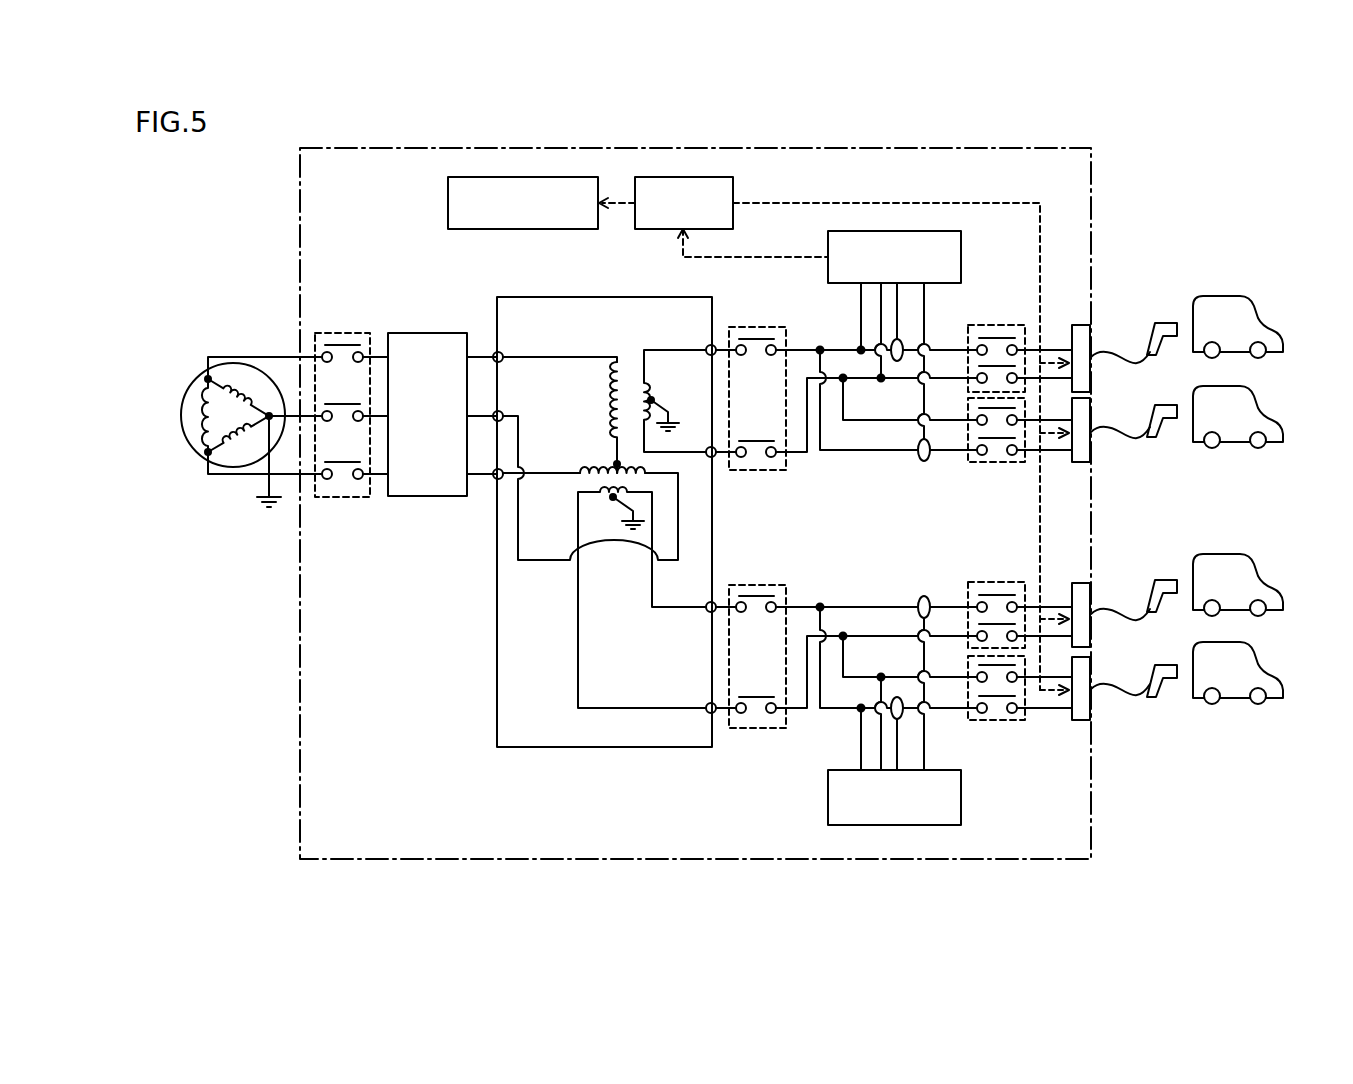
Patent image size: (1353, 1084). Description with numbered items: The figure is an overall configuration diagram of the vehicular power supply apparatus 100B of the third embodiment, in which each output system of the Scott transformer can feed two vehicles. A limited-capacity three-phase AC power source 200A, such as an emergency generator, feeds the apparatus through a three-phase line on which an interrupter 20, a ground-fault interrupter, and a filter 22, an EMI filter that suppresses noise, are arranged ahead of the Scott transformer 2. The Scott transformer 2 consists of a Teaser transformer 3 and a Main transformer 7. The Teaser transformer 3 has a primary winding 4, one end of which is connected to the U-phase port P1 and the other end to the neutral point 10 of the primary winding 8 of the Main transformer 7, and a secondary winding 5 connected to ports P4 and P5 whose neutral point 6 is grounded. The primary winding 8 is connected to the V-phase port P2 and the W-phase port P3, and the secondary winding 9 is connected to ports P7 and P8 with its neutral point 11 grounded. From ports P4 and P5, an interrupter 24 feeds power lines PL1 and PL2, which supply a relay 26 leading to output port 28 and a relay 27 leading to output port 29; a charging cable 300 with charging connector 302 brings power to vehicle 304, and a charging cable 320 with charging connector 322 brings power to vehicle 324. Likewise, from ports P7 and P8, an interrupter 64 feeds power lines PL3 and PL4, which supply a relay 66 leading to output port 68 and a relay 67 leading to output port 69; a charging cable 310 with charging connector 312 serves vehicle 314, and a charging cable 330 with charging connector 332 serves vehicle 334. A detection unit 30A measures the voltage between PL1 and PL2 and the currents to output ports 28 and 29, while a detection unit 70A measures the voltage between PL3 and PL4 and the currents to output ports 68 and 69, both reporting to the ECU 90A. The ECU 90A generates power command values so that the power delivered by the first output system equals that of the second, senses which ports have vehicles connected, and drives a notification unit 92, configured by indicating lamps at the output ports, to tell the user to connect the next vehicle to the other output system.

The vehicular power supply apparatus 100B is at (1037, 148).
The three-phase AC power source 200A is at (187, 388).
The interrupter 20 is at (346, 333).
The filter 22 is at (427, 333).
The Scott transformer 2 is at (665, 297).
The Teaser transformer 3 is at (643, 390).
The primary winding 4 is at (611, 400).
The secondary winding 5 is at (649, 392).
The neutral point 6 is at (656, 400).
The Main transformer 7 is at (628, 574).
The primary winding 8 is at (580, 468).
The secondary winding 9 is at (605, 500).
The neutral point 10 is at (615, 463).
The neutral point 11 is at (613, 502).
The port P1 is at (503, 360).
The port P2 is at (503, 413).
The port P3 is at (493, 481).
The port P4 is at (706, 347).
The port P5 is at (713, 457).
The port P7 is at (706, 603).
The port P8 is at (706, 704).
The interrupter 24 is at (758, 327).
The power line PL1 is at (813, 347).
The power line PL2 is at (800, 457).
The relay 26 is at (1000, 325).
The relay 27 is at (1000, 463).
The output port 28 is at (1078, 325).
The output port 29 is at (1078, 463).
The detection unit 30A is at (962, 250).
The interrupter 64 is at (758, 585).
The power line PL3 is at (813, 604).
The power line PL4 is at (800, 712).
The relay 66 is at (1000, 582).
The relay 67 is at (1000, 720).
The output port 68 is at (1078, 583).
The output port 69 is at (1078, 720).
The detection unit 70A is at (962, 800).
The ECU 90A is at (648, 231).
The notification unit 92 is at (524, 231).
The charging cable 300 is at (1108, 352).
The charging connector 302 is at (1165, 322).
The vehicle 304 is at (1242, 296).
The charging cable 320 is at (1108, 431).
The charging connector 322 is at (1165, 404).
The vehicle 324 is at (1242, 386).
The charging cable 310 is at (1108, 609).
The charging connector 312 is at (1165, 579).
The vehicle 314 is at (1242, 554).
The charging cable 330 is at (1108, 690).
The charging connector 332 is at (1165, 664).
The vehicle 334 is at (1242, 642).